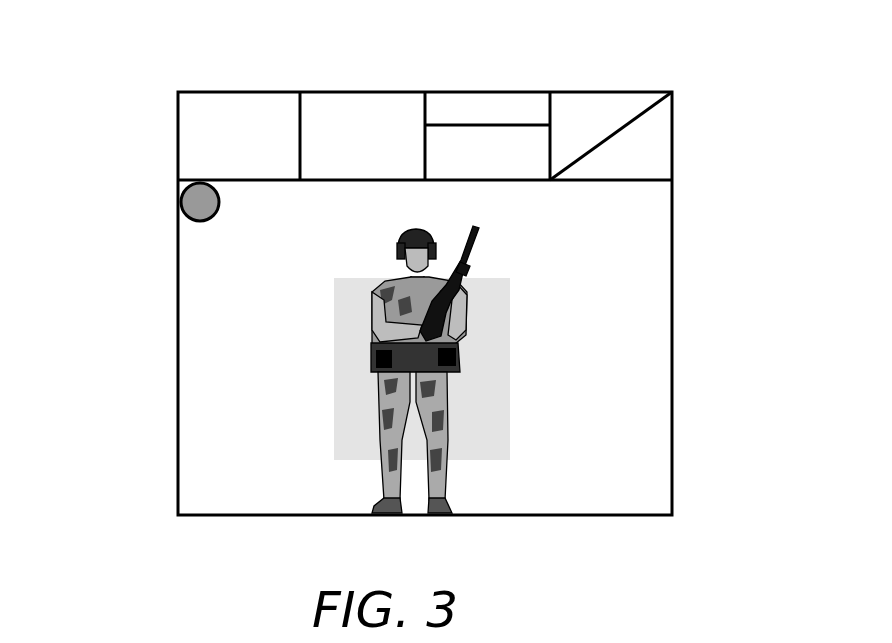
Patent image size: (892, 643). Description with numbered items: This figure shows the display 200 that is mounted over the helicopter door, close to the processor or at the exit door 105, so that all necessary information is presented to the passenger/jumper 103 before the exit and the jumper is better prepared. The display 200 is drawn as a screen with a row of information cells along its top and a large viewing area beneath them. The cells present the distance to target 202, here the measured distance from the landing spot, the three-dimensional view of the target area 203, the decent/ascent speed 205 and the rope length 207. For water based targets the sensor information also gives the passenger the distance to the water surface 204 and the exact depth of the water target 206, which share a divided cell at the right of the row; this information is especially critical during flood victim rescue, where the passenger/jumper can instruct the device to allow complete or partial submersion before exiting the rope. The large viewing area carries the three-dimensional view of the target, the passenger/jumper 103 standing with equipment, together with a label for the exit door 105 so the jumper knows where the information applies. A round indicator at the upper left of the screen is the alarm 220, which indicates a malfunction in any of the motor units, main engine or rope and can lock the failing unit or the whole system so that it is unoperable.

The display 200 is at (141, 56).
The distance to target 202 is at (258, 108).
The 3-dimensional view of the target area 203 is at (392, 110).
The distance to the water surface 204 is at (617, 100).
The decent/ascent speed 205 is at (525, 105).
The exact depth of the water target 206 is at (657, 147).
The rope length 207 is at (525, 165).
The alarm 220 is at (188, 203).
The passenger/jumper 103 is at (455, 343).
The exit door 105 is at (262, 424).